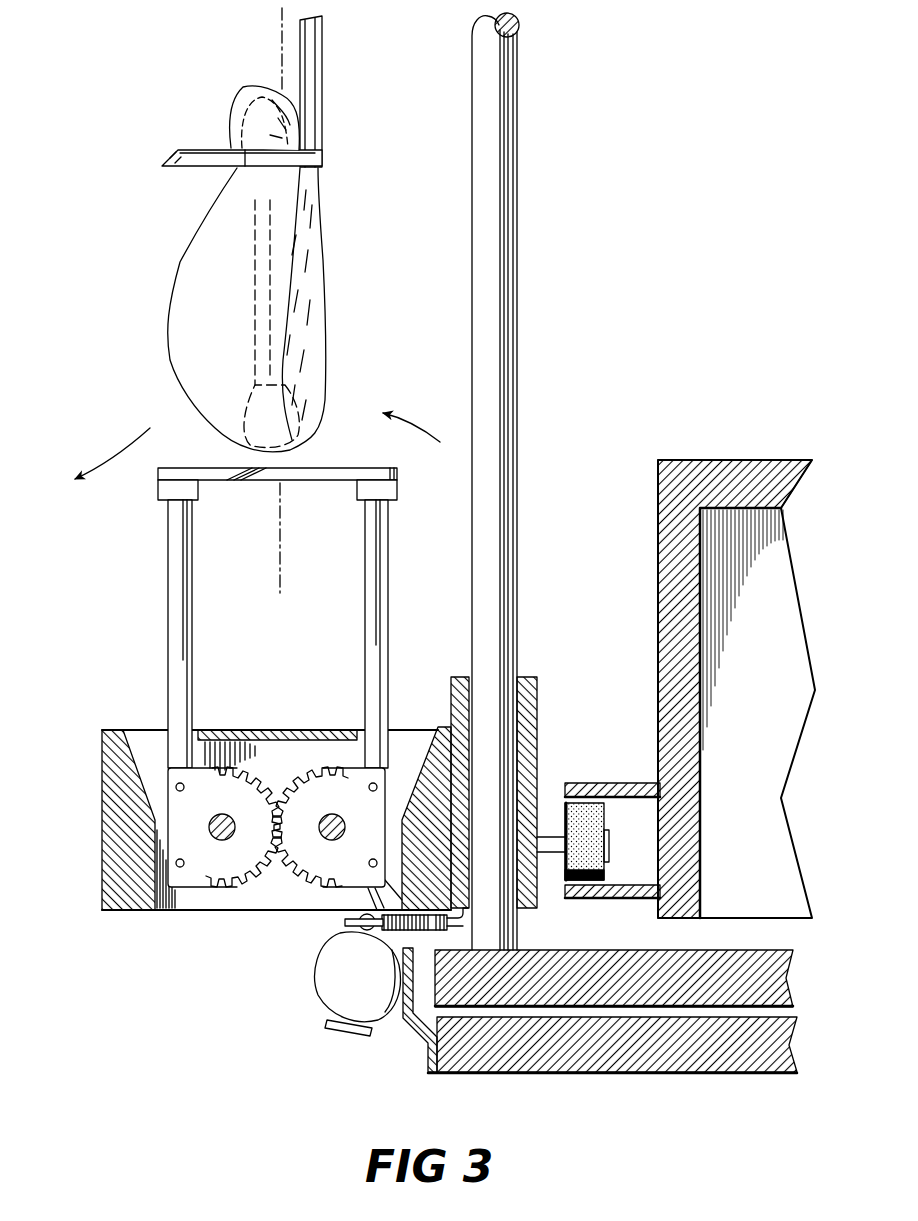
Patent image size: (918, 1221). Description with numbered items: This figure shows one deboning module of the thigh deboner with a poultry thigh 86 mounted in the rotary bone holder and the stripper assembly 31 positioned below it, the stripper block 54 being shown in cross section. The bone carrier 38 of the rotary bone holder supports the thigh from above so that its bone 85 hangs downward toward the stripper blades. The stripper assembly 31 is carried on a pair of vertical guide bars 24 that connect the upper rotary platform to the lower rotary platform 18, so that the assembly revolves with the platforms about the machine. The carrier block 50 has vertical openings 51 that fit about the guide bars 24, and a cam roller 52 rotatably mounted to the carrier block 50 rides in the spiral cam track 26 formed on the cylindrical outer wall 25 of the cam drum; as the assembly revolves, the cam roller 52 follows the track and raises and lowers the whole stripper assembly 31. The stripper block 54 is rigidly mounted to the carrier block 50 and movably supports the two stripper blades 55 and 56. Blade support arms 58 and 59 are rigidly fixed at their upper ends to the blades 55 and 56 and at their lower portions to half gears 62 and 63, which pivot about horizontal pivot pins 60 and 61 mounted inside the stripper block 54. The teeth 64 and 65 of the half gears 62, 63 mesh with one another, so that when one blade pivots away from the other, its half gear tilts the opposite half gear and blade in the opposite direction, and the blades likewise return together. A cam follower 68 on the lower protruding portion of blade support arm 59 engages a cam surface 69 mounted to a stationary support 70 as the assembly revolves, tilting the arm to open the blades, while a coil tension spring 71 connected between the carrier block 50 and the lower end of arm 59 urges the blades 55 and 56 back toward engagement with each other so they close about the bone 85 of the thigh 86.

The lower rotary platform 18 is at (574, 957).
The vertical guide bars 24 is at (482, 243).
The cylindrical outer wall 25 is at (658, 479).
The spiral cam track 26 is at (617, 773).
The stripper assembly 31 is at (128, 627).
The bone carrier 38 is at (168, 108).
The carrier block 50 is at (538, 699).
The vertical openings 51 is at (466, 676).
The cam roller 52 is at (600, 816).
The stripper block 54 is at (112, 836).
The stripper blade 55 is at (333, 468).
The stripper blade 56 is at (219, 469).
The blade support arm 58 is at (170, 573).
The blade support arm 59 is at (370, 564).
The pivot pin 60 is at (230, 814).
The pivot pin 61 is at (334, 814).
The half gear 62 is at (207, 876).
The half gear 63 is at (345, 878).
The teeth 64 is at (290, 768).
The teeth 65 is at (307, 880).
The cam follower 68 is at (318, 985).
The cam surface 69 is at (403, 1020).
The stationary support 70 is at (550, 1075).
The coil tension spring 71 is at (403, 935).
The bone 85 is at (238, 124).
The poultry thigh 86 is at (226, 212).